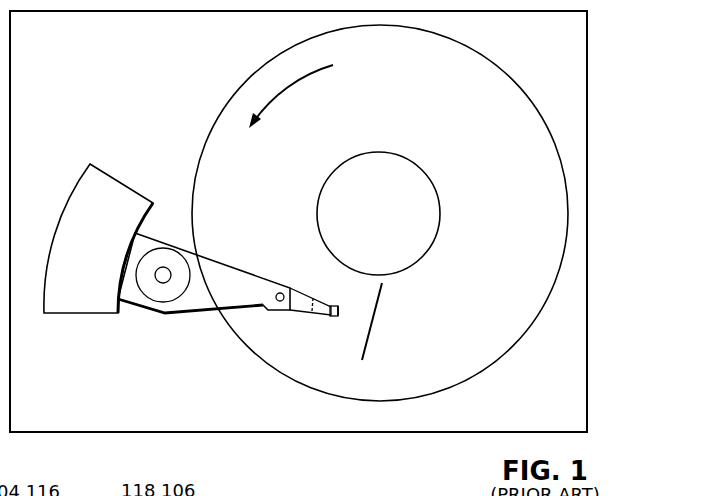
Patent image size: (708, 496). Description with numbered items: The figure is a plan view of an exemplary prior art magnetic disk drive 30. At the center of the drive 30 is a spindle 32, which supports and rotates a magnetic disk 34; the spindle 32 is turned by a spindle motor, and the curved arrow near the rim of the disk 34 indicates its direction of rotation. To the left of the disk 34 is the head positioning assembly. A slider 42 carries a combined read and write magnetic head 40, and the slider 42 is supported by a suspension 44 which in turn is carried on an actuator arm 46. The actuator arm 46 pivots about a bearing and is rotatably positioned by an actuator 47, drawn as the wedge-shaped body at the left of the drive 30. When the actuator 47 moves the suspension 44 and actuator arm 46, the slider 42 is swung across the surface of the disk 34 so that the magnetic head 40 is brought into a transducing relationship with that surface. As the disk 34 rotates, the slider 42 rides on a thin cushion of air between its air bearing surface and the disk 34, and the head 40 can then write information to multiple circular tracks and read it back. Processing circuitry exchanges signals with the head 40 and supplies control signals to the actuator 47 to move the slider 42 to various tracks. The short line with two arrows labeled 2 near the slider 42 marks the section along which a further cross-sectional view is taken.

The magnetic disk drive 30 is at (610, 40).
The spindle 32 is at (413, 162).
The magnetic disk 34 is at (490, 233).
The magnetic head 40 is at (338, 316).
The slider 42 is at (338, 306).
The suspension 44 is at (300, 313).
The actuator arm 46 is at (243, 278).
The actuator 47 is at (128, 192).
The section line 2- 2 is at (392, 294).